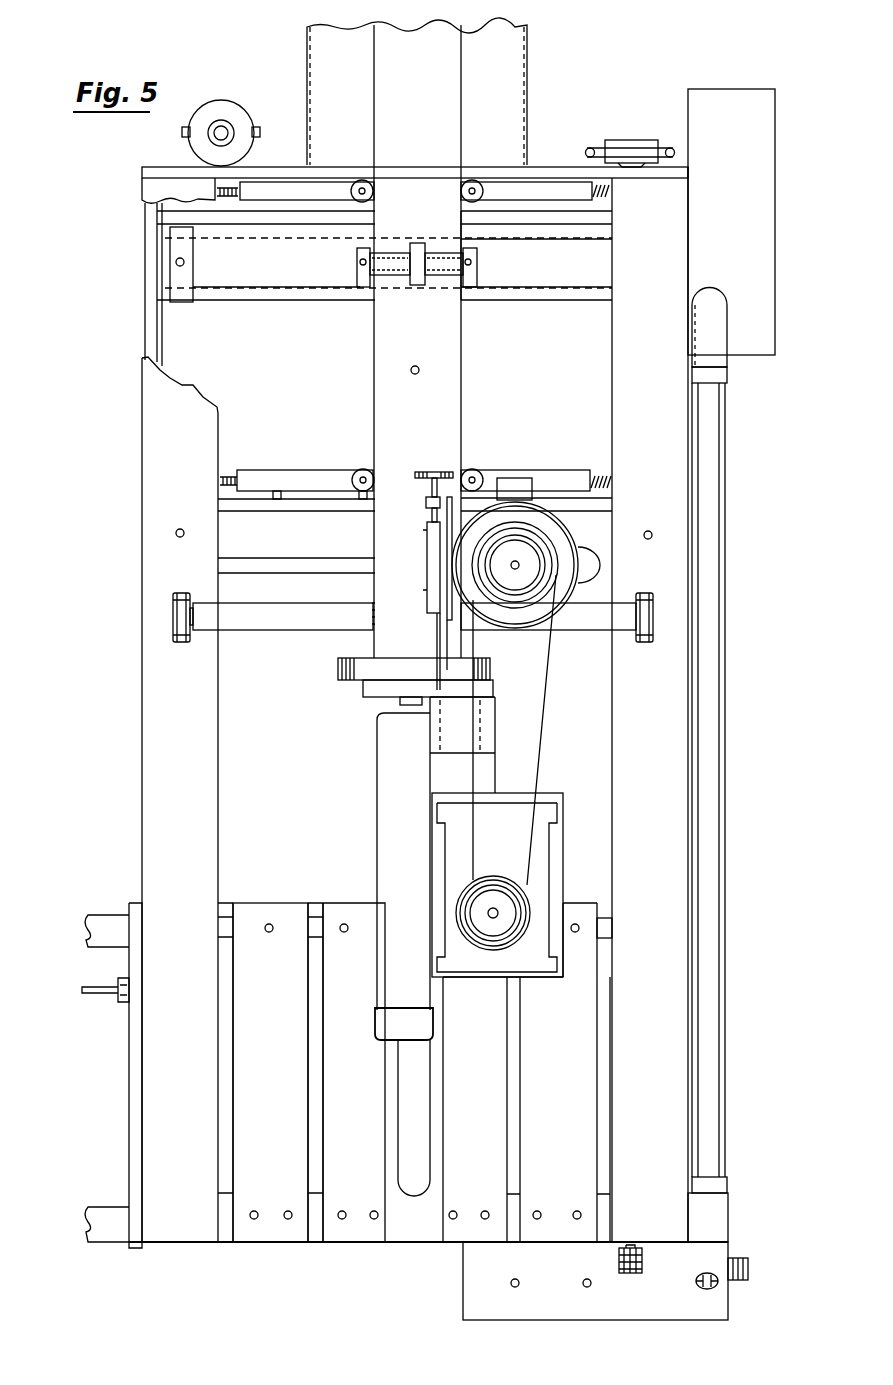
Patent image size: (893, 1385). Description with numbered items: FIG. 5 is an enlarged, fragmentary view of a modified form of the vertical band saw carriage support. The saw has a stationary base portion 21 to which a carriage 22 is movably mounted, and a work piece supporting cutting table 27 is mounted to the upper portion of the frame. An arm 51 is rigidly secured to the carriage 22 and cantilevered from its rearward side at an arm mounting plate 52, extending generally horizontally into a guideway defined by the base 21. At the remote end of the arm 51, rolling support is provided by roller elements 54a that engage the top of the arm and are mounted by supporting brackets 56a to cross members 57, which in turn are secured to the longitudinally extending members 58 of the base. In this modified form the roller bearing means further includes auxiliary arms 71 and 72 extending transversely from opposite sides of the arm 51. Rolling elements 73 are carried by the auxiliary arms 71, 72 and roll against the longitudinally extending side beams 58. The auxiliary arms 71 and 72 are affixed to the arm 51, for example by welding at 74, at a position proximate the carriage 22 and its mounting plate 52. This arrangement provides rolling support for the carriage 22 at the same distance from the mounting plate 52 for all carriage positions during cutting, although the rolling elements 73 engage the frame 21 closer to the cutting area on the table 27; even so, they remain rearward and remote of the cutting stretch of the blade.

The stationary base portion 21 is at (125, 340).
The carriage 22 is at (372, 818).
The work piece supporting cutting table 27 is at (268, 1177).
The arm 51 is at (410, 348).
The arm mounting plate 52 is at (357, 680).
The roller elements 54a is at (417, 287).
The supporting brackets 56a is at (500, 283).
The cross members 57 is at (598, 300).
The longitudinally extending members 58 is at (158, 483).
The auxiliary arm 71 is at (592, 625).
The auxiliary arm 72 is at (298, 620).
The rolling elements 73 is at (653, 620).
The welding 74 is at (372, 603).